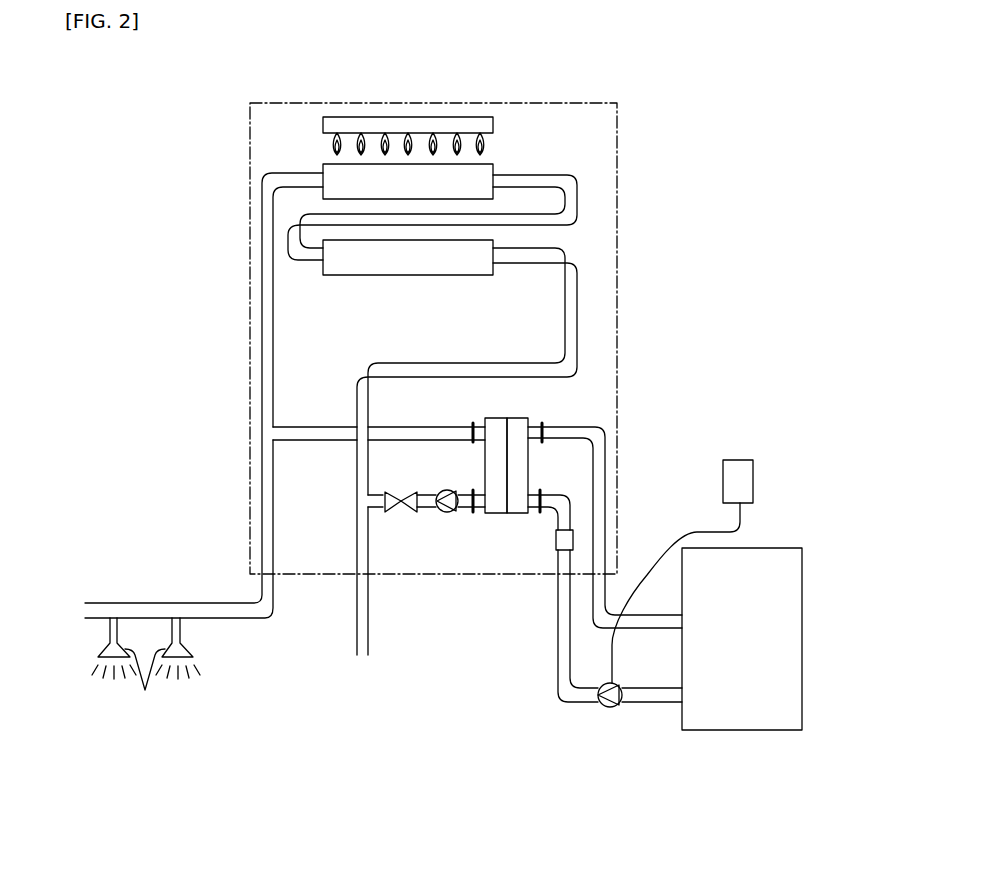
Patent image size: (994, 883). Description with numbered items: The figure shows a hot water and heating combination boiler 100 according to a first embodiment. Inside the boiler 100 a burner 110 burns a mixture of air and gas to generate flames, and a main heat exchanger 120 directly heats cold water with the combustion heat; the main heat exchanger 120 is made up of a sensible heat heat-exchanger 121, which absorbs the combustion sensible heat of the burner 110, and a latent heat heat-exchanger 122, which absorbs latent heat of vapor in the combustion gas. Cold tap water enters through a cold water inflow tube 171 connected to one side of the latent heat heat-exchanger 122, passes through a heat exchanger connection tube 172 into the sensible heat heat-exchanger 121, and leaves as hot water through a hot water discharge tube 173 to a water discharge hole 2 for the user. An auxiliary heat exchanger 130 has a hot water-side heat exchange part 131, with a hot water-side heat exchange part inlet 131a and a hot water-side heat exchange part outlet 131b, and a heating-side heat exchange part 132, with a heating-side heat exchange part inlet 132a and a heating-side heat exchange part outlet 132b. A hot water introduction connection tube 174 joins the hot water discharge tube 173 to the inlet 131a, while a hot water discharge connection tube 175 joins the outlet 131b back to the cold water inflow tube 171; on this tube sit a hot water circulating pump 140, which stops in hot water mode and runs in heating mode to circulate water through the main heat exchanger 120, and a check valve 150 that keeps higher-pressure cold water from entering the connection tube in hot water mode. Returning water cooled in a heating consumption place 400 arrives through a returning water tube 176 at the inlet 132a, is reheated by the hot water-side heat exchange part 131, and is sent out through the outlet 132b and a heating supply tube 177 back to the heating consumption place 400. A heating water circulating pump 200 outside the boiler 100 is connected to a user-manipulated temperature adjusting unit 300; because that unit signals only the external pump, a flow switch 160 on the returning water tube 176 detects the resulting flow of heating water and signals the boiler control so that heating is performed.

The water discharge hole 2 is at (146, 667).
The hot water and heating combination boiler 100 is at (250, 146).
The burner 110 is at (458, 127).
The main heat exchanger 120 is at (518, 217).
The sensible heat heat-exchanger 121 is at (493, 168).
The latent heat heat-exchanger 122 is at (493, 242).
The auxiliary heat exchanger 130 is at (574, 474).
The hot water-side heat exchange part 131 is at (549, 474).
The hot water-side heat exchange part inlet 131a is at (478, 428).
The hot water-side heat exchange part outlet 131b is at (478, 510).
The heating-side heat exchange part 132 is at (579, 469).
The heating-side heat exchange part inlet 132a is at (535, 505).
The heating-side heat exchange part outlet 132b is at (533, 428).
The hot water circulating pump 140 is at (447, 512).
The check valve 150 is at (410, 492).
The flow switch 160 is at (557, 540).
The cold water inflow tube 171 is at (577, 298).
The heat exchanger connection tube 172 is at (289, 241).
The hot water discharge tube 173 is at (262, 345).
The hot water introduction connection tube 174 is at (425, 430).
The hot water discharge connection tube 175 is at (426, 494).
The returning water tube 176 is at (582, 633).
The heating supply tube 177 is at (598, 528).
The heating water circulating pump 200 is at (608, 707).
The temperature adjusting unit 300 is at (735, 460).
The heating consumption place 400 is at (737, 730).